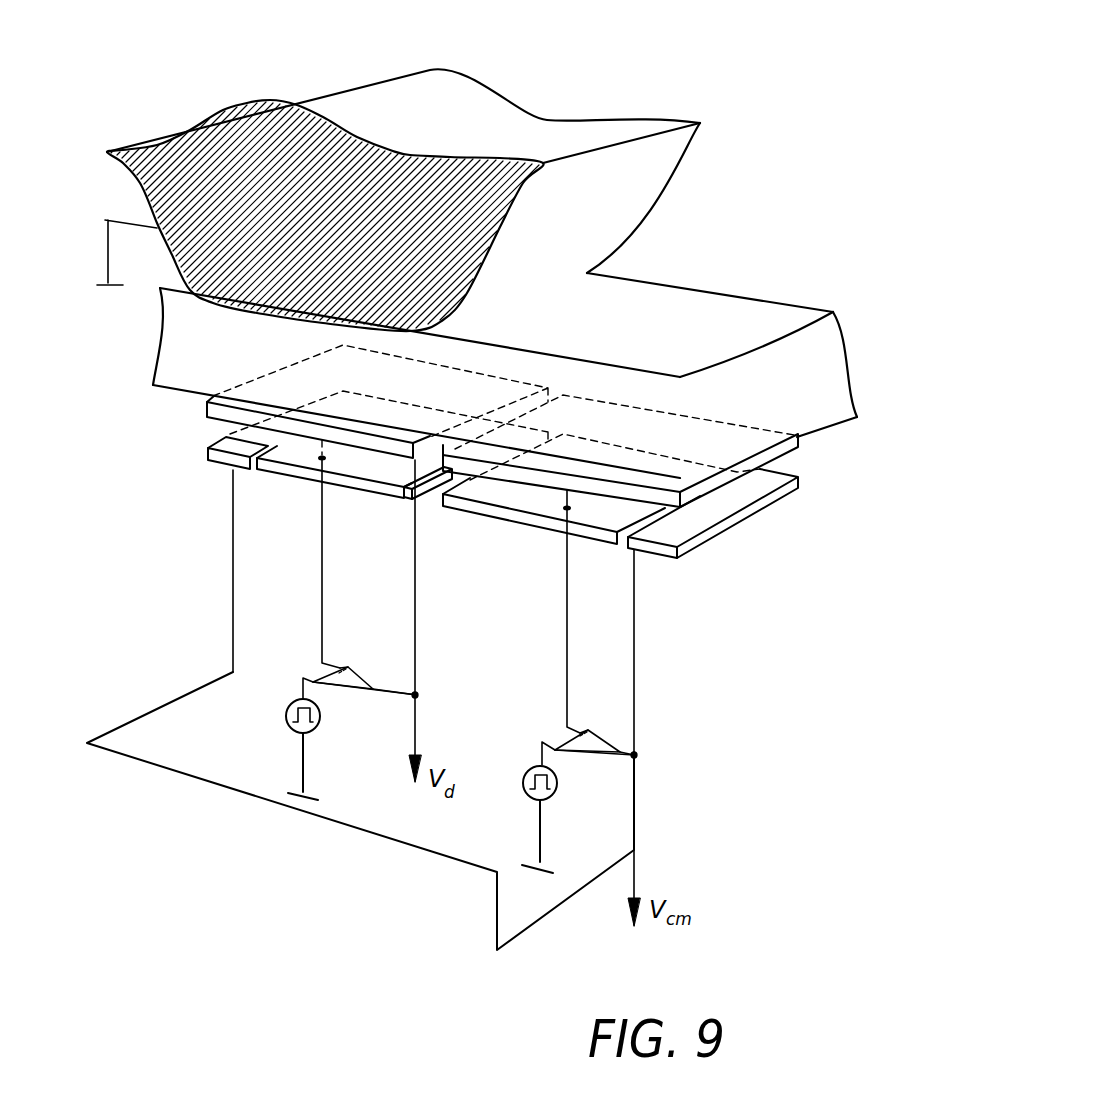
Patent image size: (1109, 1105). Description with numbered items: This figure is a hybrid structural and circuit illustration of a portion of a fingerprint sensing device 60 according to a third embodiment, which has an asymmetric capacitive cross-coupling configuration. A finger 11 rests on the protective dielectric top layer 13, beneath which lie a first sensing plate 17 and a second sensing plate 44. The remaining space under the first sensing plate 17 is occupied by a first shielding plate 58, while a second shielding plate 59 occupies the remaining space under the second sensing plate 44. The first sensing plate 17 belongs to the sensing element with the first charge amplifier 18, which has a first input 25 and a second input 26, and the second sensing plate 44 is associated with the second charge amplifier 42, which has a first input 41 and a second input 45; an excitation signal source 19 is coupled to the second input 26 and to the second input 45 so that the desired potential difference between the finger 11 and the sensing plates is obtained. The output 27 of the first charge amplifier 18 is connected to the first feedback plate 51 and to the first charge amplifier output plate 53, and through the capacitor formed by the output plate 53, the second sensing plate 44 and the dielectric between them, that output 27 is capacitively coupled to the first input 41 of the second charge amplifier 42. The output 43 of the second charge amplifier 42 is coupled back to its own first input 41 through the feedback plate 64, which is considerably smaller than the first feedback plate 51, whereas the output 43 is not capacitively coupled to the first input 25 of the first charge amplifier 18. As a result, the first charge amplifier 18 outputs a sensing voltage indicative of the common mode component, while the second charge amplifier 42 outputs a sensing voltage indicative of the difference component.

The fingerprint sensing device 60 is at (785, 125).
The finger 11 is at (257, 148).
The protective dielectric top layer 13 is at (607, 383).
The first sensing plate 17 is at (655, 490).
The second sensing plate 44 is at (223, 410).
The first charge amplifier output plate 53 is at (218, 457).
The second shielding plate 59 is at (292, 470).
The feedback plate 64 is at (425, 492).
The first shielding plate 58 is at (551, 528).
The first feedback plate 51 is at (683, 527).
The second charge amplifier 42 is at (343, 697).
The second input of the second charge amplifier 45 is at (320, 682).
The first input of the second charge amplifier 41 is at (340, 667).
The output of the second charge amplifier 43 is at (373, 683).
The excitation signal source 19 is at (288, 728).
The first charge amplifier 18 is at (582, 767).
The second input of the first charge amplifier 26 is at (557, 748).
The first input of the first charge amplifier 25 is at (580, 730).
The output of the first charge amplifier 27 is at (622, 748).